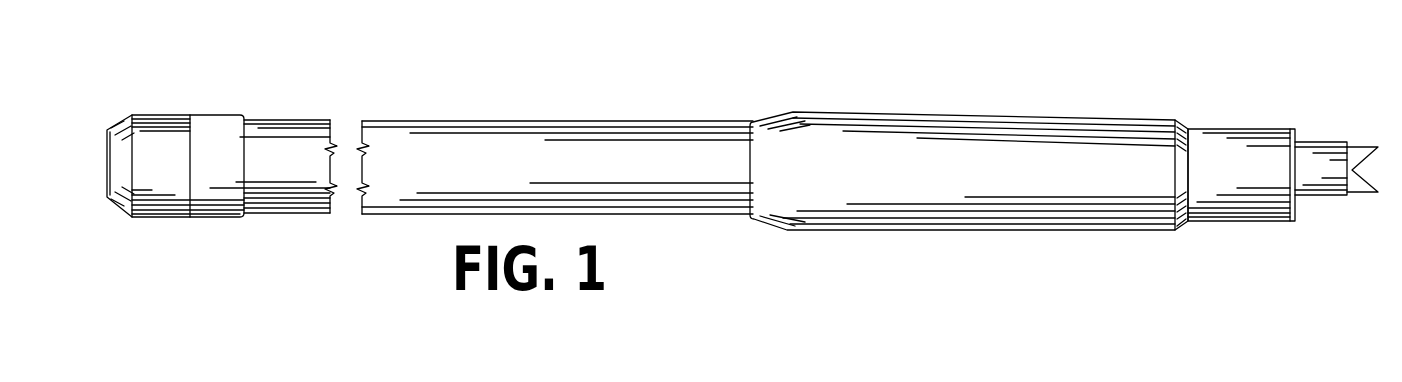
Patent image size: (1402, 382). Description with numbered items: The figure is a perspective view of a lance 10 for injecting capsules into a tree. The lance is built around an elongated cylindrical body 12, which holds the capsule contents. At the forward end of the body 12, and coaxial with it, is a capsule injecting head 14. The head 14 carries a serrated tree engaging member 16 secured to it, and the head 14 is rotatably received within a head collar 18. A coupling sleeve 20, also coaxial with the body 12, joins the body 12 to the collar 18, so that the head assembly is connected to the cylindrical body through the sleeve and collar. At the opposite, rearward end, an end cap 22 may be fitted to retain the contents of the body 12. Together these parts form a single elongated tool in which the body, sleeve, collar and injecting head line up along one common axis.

The lance 10 is at (1121, 102).
The elongated cylindrical body 12 is at (588, 135).
The capsule injecting head 14 is at (1315, 175).
The serrated tree engaging member 16 is at (1352, 155).
The head collar 18 is at (1227, 130).
The coupling sleeve 20 is at (1000, 140).
The end cap 22 is at (167, 135).